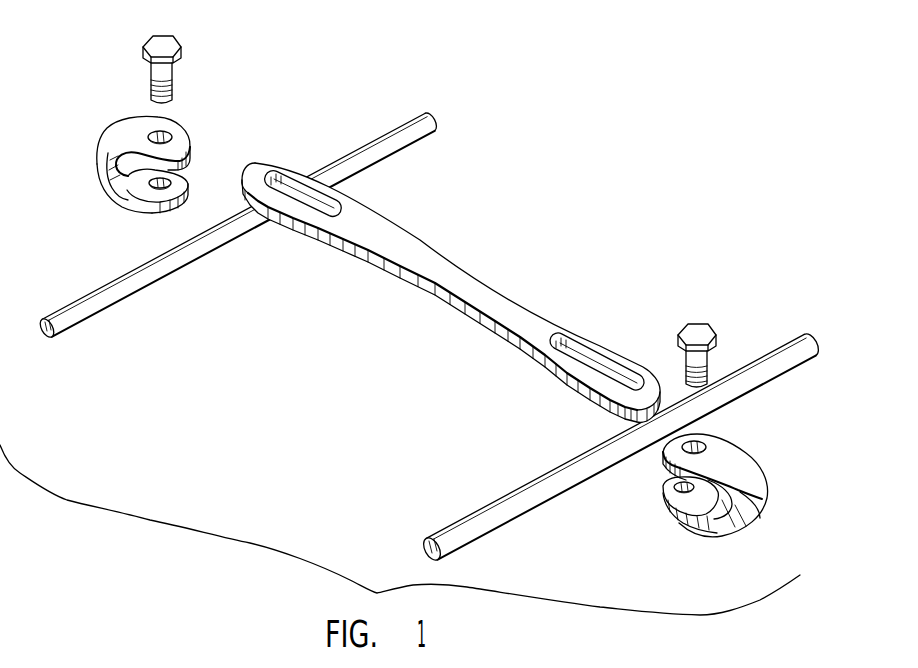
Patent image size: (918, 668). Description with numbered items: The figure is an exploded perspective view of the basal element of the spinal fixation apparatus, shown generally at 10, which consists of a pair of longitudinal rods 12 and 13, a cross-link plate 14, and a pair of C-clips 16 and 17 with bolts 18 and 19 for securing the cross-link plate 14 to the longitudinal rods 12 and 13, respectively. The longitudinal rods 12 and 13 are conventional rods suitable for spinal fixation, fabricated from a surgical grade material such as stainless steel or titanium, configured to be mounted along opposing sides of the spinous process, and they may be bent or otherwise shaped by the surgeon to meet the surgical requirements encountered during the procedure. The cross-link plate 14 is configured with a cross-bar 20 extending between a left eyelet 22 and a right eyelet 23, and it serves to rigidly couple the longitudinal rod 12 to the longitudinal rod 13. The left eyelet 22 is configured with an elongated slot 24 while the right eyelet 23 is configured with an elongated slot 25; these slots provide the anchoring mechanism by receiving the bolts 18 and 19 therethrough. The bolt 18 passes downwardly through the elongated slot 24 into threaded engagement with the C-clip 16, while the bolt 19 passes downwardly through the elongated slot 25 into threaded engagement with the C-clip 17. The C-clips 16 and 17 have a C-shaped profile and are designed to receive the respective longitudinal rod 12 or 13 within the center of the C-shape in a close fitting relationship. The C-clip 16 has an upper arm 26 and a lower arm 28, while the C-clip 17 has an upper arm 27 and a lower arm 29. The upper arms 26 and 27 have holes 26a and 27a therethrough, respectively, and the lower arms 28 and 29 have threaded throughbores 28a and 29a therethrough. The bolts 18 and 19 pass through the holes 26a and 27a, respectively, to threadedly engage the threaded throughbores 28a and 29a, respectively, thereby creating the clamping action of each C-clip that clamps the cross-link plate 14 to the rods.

The spinal fixation apparatus basal element 10 is at (601, 199).
The longitudinal rod 12 is at (110, 310).
The longitudinal rod 13 is at (527, 497).
The cross-link plate 14 is at (451, 257).
The C-clip 16 is at (136, 175).
The C-clip 17 is at (729, 492).
The bolt 18 is at (154, 33).
The bolt 19 is at (697, 323).
The cross-bar 20 is at (453, 300).
The left eyelet 22 is at (306, 193).
The right eyelet 23 is at (603, 332).
The elongated slot 24 is at (290, 173).
The elongated slot 25 is at (597, 367).
The upper arm 26 is at (173, 134).
The hole 26a is at (163, 137).
The upper arm 27 is at (734, 471).
The hole 27a is at (693, 443).
The lower arm 28 is at (116, 213).
The threaded throughbore 28a is at (160, 182).
The lower arm 29 is at (667, 528).
The threaded throughbore 29a is at (695, 498).